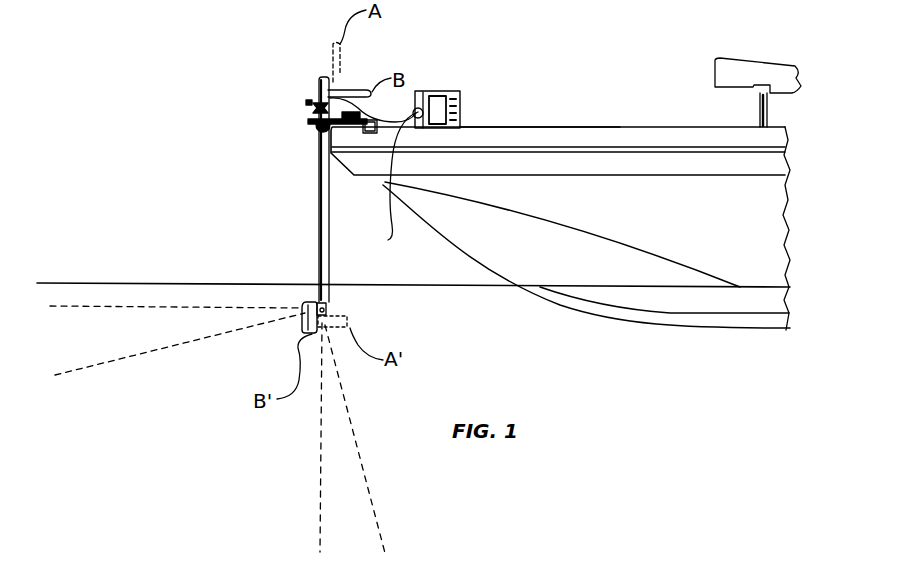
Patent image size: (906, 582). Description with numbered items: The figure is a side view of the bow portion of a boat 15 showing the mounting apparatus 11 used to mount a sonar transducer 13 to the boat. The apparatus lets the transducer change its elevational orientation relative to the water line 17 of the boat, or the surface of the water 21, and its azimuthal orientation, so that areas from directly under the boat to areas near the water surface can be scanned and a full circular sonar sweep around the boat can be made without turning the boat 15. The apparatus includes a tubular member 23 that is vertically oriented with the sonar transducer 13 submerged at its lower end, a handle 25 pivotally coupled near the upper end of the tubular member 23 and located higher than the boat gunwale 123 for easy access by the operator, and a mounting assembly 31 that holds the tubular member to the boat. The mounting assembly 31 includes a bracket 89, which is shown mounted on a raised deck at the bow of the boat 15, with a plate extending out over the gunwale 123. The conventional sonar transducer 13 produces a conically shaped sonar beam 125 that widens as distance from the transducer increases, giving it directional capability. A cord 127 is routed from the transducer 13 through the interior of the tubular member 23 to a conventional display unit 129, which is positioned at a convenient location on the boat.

The mounting apparatus 11 is at (246, 158).
The sonar transducer 13 is at (303, 334).
The boat 15 is at (566, 224).
The water line 17 is at (676, 290).
The surface of the water 21 is at (69, 282).
The tubular member 23 is at (318, 180).
The handle 25 is at (360, 89).
The mounting assembly 31 is at (308, 118).
The bracket 89 is at (358, 128).
The gunwale 123 is at (519, 126).
The sonar beam 125 is at (123, 362).
The cord 127 is at (388, 240).
The display unit 129 is at (448, 88).